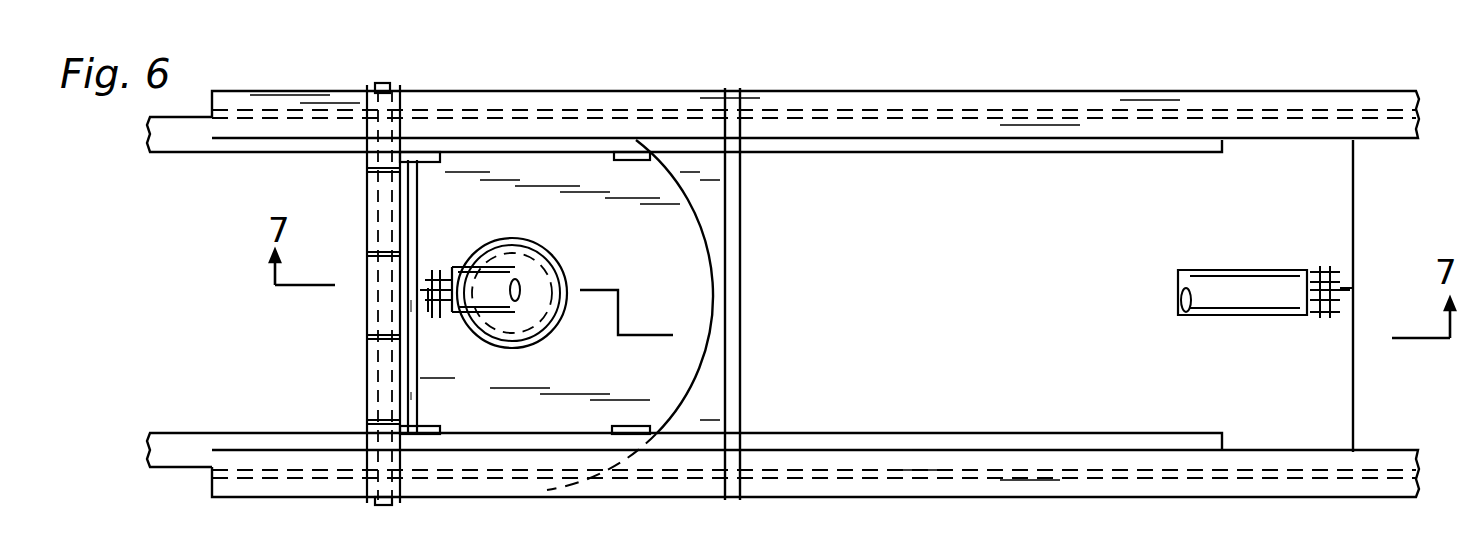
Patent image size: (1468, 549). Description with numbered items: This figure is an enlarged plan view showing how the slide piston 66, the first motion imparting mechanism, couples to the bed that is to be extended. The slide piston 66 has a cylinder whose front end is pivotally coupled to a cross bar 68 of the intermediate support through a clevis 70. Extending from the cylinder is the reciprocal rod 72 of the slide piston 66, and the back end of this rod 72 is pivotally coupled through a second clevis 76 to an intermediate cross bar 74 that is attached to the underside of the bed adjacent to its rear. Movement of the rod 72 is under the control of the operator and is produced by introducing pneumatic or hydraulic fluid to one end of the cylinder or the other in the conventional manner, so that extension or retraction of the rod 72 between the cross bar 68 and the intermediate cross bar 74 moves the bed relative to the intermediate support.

The slide piston 66 is at (1237, 297).
The cross bar 68 is at (1352, 357).
The clevis 70 is at (1320, 272).
The reciprocal rod 72 is at (436, 278).
The intermediate cross bar 74 is at (414, 396).
The clevis 76 is at (417, 310).